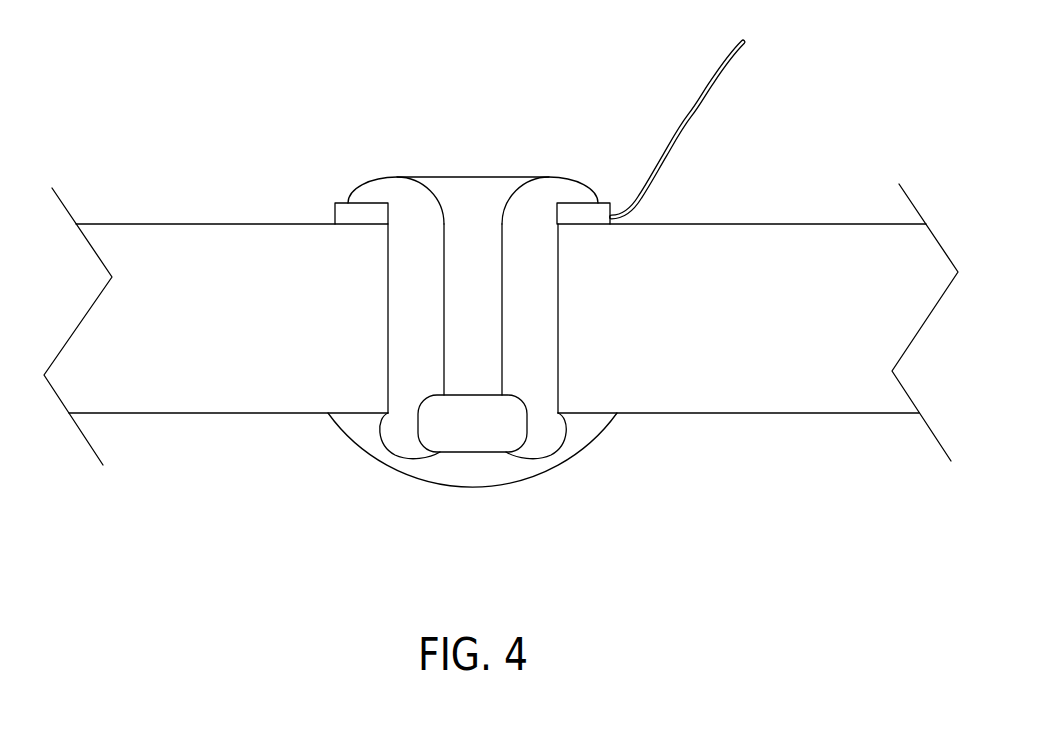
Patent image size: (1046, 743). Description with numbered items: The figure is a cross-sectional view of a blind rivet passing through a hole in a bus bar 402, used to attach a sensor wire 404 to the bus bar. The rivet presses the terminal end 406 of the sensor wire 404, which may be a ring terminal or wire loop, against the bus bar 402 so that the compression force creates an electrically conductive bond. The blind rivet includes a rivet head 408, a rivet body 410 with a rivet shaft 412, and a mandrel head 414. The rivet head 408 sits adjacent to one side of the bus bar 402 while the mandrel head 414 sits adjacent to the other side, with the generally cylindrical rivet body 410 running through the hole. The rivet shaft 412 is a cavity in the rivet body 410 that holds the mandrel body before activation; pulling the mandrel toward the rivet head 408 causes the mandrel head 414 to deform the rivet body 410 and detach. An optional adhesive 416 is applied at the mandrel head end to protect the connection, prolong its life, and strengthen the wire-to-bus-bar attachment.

The bus bar 402 is at (128, 247).
The sensor wire 404 is at (694, 114).
The terminal end 406 is at (380, 206).
The rivet head 408 is at (329, 173).
The rivet body 410 is at (375, 237).
The rivet shaft 412 is at (483, 313).
The mandrel head 414 is at (470, 440).
The adhesive 416 is at (425, 467).